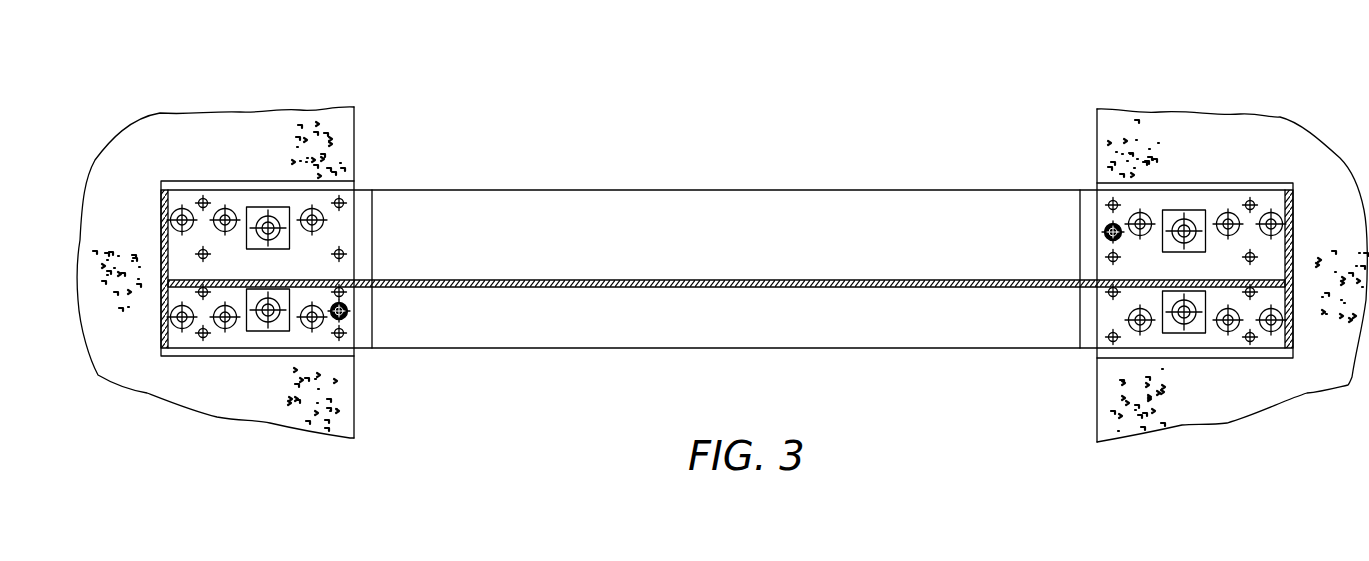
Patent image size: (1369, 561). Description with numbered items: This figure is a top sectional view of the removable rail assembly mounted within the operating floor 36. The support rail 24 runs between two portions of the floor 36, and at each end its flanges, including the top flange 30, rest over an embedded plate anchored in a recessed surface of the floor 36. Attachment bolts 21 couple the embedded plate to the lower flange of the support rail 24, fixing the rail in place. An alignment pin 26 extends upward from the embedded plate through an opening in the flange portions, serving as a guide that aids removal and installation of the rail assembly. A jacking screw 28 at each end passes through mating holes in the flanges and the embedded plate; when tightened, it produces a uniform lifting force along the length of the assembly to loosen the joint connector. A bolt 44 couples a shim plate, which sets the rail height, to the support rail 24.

The attachment bolt 21 is at (1275, 324).
The support rail 24 is at (934, 348).
The alignment pin 26 is at (346, 312).
The jacking screw 28 is at (1197, 225).
The top flange 30 is at (197, 188).
The operating floor 36 is at (277, 113).
The bolt 44 is at (1107, 210).